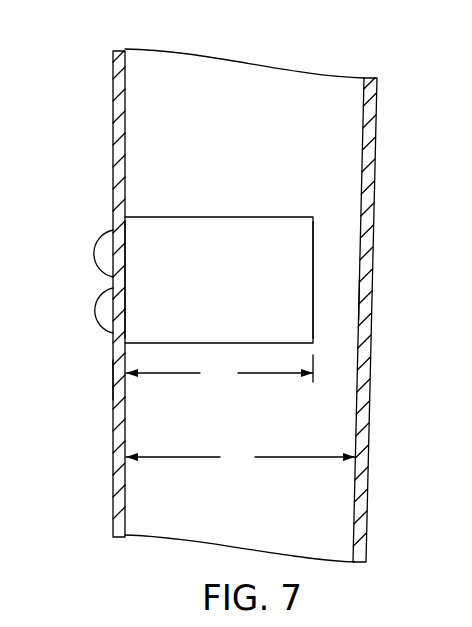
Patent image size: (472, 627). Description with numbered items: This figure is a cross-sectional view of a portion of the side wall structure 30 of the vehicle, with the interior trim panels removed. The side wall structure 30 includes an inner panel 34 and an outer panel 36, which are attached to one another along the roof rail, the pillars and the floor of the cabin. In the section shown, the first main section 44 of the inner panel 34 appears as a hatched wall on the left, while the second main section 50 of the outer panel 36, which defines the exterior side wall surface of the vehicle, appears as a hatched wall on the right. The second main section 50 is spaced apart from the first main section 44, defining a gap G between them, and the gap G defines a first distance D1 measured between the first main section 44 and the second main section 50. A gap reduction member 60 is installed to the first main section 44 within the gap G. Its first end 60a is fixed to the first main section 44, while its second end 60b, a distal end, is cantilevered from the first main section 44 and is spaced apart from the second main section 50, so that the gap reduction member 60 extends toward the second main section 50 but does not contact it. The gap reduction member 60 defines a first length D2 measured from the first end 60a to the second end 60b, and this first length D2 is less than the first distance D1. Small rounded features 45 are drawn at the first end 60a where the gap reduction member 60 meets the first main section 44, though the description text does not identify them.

The side wall structure 30 is at (244, 291).
The inner panel 34 is at (113, 125).
The outer panel 36 is at (376, 152).
The first main section 44 is at (113, 375).
The protrusions 45 is at (99, 242).
The second main section 50 is at (362, 294).
The gap reduction member 60 is at (194, 217).
The first end 60a is at (113, 282).
The second end 60b is at (313, 256).
The gap G is at (290, 395).
The first distance D1 is at (240, 459).
The first length D2 is at (219, 373).